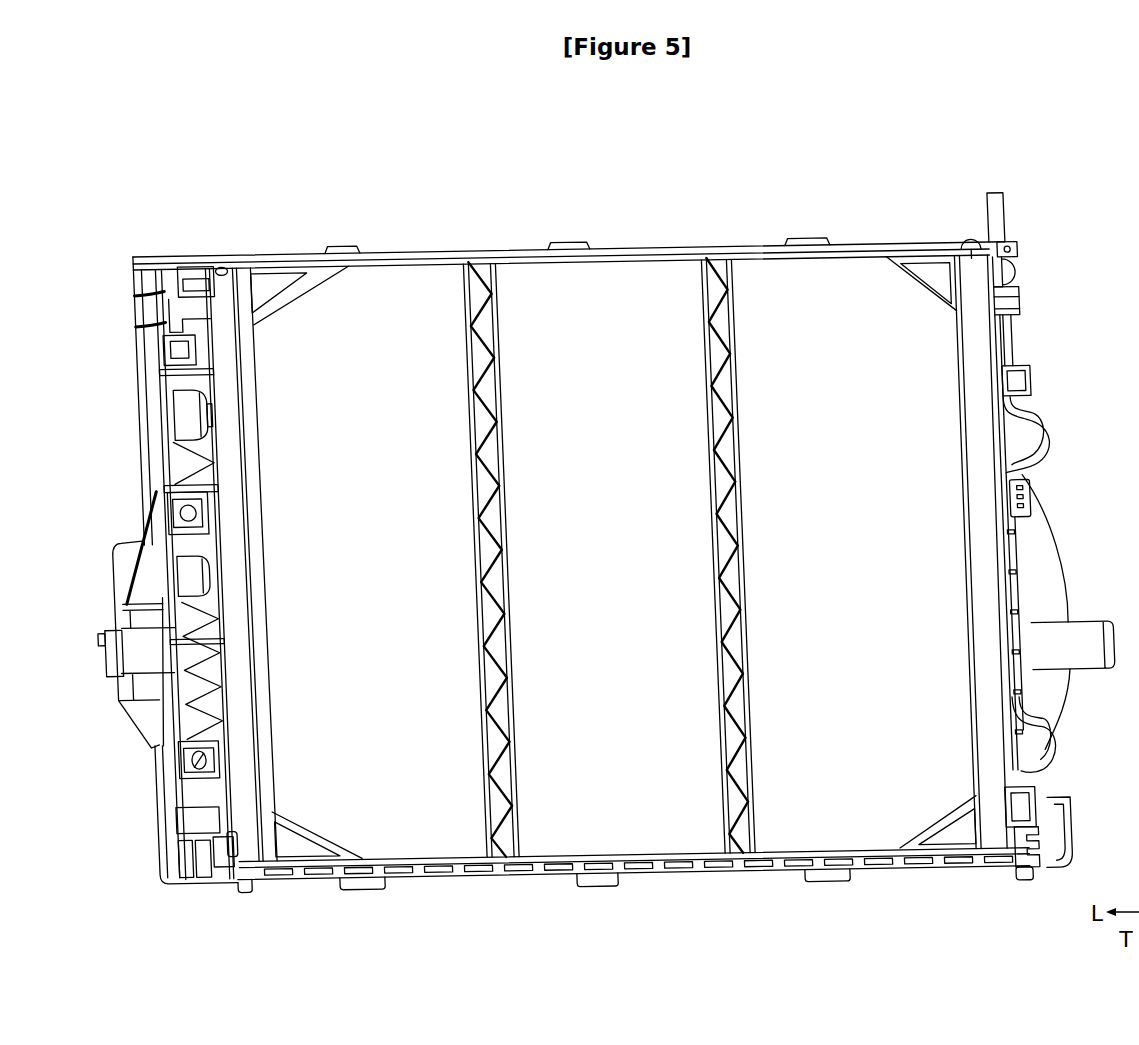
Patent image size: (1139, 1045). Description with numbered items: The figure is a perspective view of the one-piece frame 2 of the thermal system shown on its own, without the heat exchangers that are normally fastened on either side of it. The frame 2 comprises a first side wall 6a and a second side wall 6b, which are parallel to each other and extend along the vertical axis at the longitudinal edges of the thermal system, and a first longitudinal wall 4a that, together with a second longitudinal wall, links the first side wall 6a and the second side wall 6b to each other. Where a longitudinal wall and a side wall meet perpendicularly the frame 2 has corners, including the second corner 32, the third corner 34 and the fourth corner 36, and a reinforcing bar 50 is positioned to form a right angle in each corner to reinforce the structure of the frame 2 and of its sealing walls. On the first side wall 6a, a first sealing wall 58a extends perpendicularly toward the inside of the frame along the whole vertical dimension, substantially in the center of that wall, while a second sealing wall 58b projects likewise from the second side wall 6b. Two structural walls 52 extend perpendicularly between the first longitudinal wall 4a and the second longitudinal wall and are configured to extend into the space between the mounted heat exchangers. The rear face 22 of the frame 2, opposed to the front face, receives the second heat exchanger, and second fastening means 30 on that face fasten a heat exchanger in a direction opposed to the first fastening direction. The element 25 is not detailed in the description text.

The frame 2 is at (1068, 176).
The first longitudinal wall 4a is at (392, 250).
The first side wall 6a is at (1024, 464).
The second side wall 6b is at (168, 448).
The rear face 22 is at (804, 833).
The bracket 25 is at (185, 410).
The second fastening means 30 is at (971, 251).
The second corner 32 is at (222, 270).
The third corner 34 is at (260, 866).
The fourth corner 36 is at (990, 840).
The reinforcing bar 50 is at (275, 293).
The structural wall 52 is at (488, 272).
The first sealing wall 58a is at (975, 345).
The second sealing wall 58b is at (258, 753).